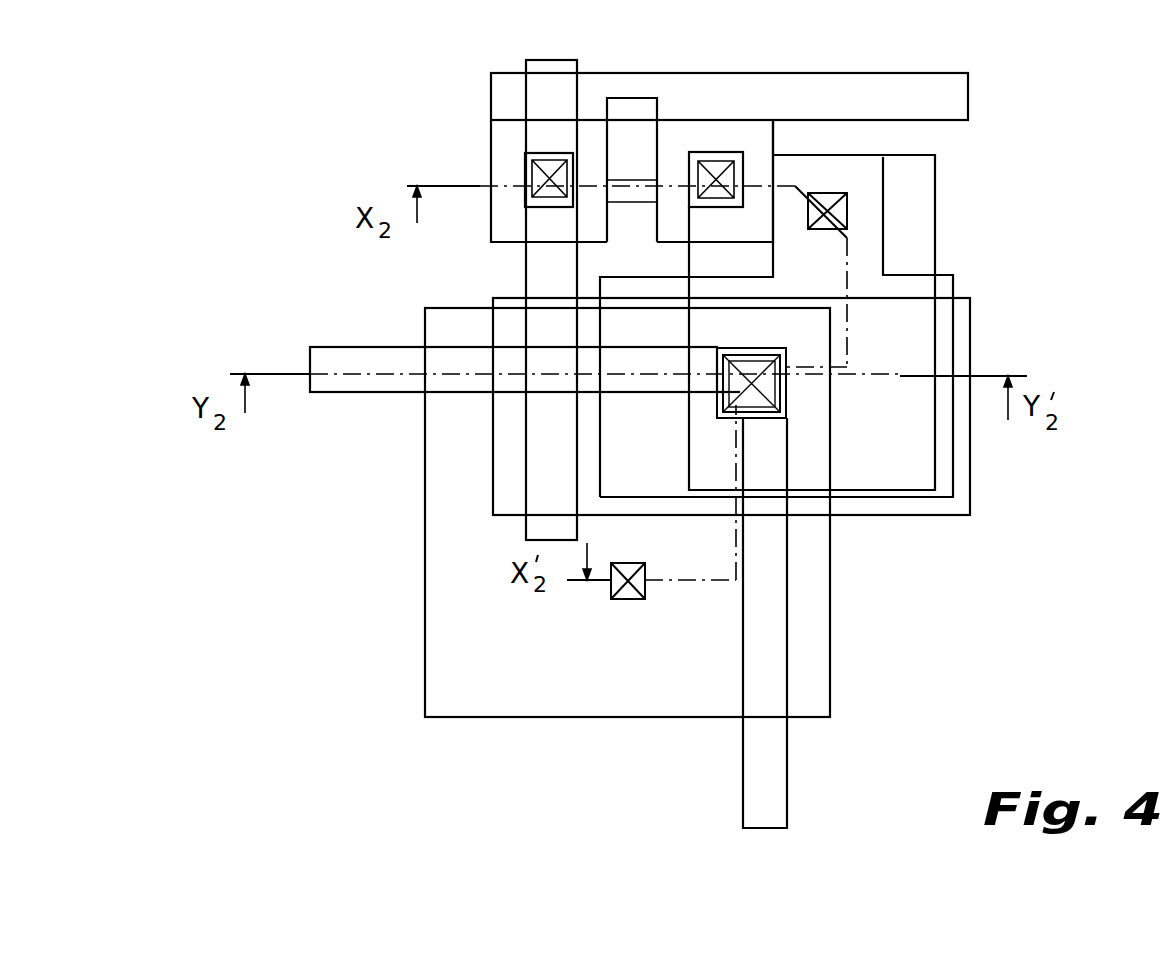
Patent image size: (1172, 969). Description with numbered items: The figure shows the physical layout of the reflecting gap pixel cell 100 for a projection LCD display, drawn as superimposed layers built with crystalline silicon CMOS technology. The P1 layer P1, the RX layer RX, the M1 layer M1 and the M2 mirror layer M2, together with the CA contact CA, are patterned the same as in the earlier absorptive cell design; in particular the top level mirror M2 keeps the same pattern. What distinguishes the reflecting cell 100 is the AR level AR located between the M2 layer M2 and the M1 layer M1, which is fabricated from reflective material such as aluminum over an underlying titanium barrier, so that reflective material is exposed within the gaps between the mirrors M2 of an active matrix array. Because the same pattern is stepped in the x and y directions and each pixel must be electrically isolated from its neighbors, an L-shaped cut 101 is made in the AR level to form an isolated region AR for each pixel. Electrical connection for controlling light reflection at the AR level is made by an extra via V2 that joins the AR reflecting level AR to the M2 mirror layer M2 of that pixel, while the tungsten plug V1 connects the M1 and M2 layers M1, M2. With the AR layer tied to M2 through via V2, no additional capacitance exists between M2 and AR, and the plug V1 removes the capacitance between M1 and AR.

The reflecting gap pixel cell 100 is at (1103, 101).
The L-shaped cut 101 is at (787, 737).
The P1 layer P1 is at (491, 88).
The RX layer RX is at (491, 150).
The M1 layer M1 is at (526, 277).
The M2 mirror layer M2 is at (425, 688).
The CA contact CA is at (847, 203).
The tungsten plug V1 is at (782, 387).
The via V2 is at (610, 585).
The AR level of reflective material AR is at (743, 795).